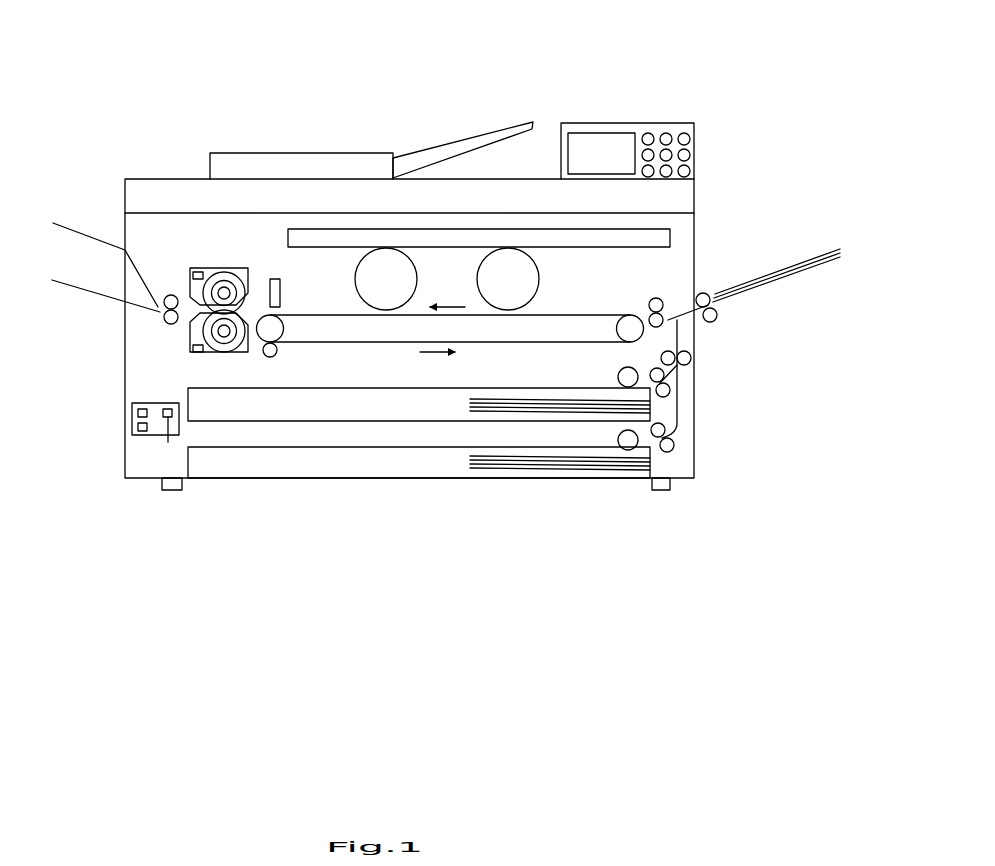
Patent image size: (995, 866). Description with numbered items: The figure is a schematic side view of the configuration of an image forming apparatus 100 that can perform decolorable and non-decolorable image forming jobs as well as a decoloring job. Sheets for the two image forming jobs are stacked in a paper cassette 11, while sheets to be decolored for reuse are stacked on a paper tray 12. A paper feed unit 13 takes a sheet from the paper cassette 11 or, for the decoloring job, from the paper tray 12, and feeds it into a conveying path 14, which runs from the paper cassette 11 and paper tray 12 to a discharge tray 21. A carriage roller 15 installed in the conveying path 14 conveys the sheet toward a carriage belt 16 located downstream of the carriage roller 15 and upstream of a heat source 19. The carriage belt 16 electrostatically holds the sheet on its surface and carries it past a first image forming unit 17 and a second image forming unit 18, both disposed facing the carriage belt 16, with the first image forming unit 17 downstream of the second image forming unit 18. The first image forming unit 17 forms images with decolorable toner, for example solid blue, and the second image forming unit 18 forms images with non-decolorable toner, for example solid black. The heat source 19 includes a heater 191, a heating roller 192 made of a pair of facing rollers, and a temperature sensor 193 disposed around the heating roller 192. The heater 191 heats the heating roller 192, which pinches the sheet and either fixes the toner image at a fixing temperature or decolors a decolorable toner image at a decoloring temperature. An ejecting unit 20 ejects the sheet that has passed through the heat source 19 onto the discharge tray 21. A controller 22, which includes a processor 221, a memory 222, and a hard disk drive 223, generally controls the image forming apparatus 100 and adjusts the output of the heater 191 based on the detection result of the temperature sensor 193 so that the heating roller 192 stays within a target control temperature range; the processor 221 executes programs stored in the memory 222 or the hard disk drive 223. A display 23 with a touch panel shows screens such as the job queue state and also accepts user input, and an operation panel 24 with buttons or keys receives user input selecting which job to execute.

The image forming apparatus 100 is at (196, 79).
The paper cassette 11 is at (305, 422).
The paper tray 12 is at (797, 276).
The paper feed unit 13 is at (704, 293).
The conveying path 14 is at (690, 400).
The carriage roller 15 is at (656, 297).
The carriage belt 16 is at (612, 312).
The first image forming unit 17 is at (355, 284).
The second image forming unit 18 is at (540, 281).
The heat source 19 is at (229, 261).
The heater 191 is at (237, 290).
The heating roller 192 is at (218, 268).
The temperature sensor 193 is at (197, 271).
The ejecting unit 20 is at (172, 295).
The discharge tray 21 is at (88, 288).
The controller 22 is at (146, 402).
The processor 221 is at (138, 413).
The memory 222 is at (168, 438).
The hard disk drive (HDD) 223 is at (138, 427).
The display 23 is at (598, 140).
The operation panel 24 is at (664, 135).